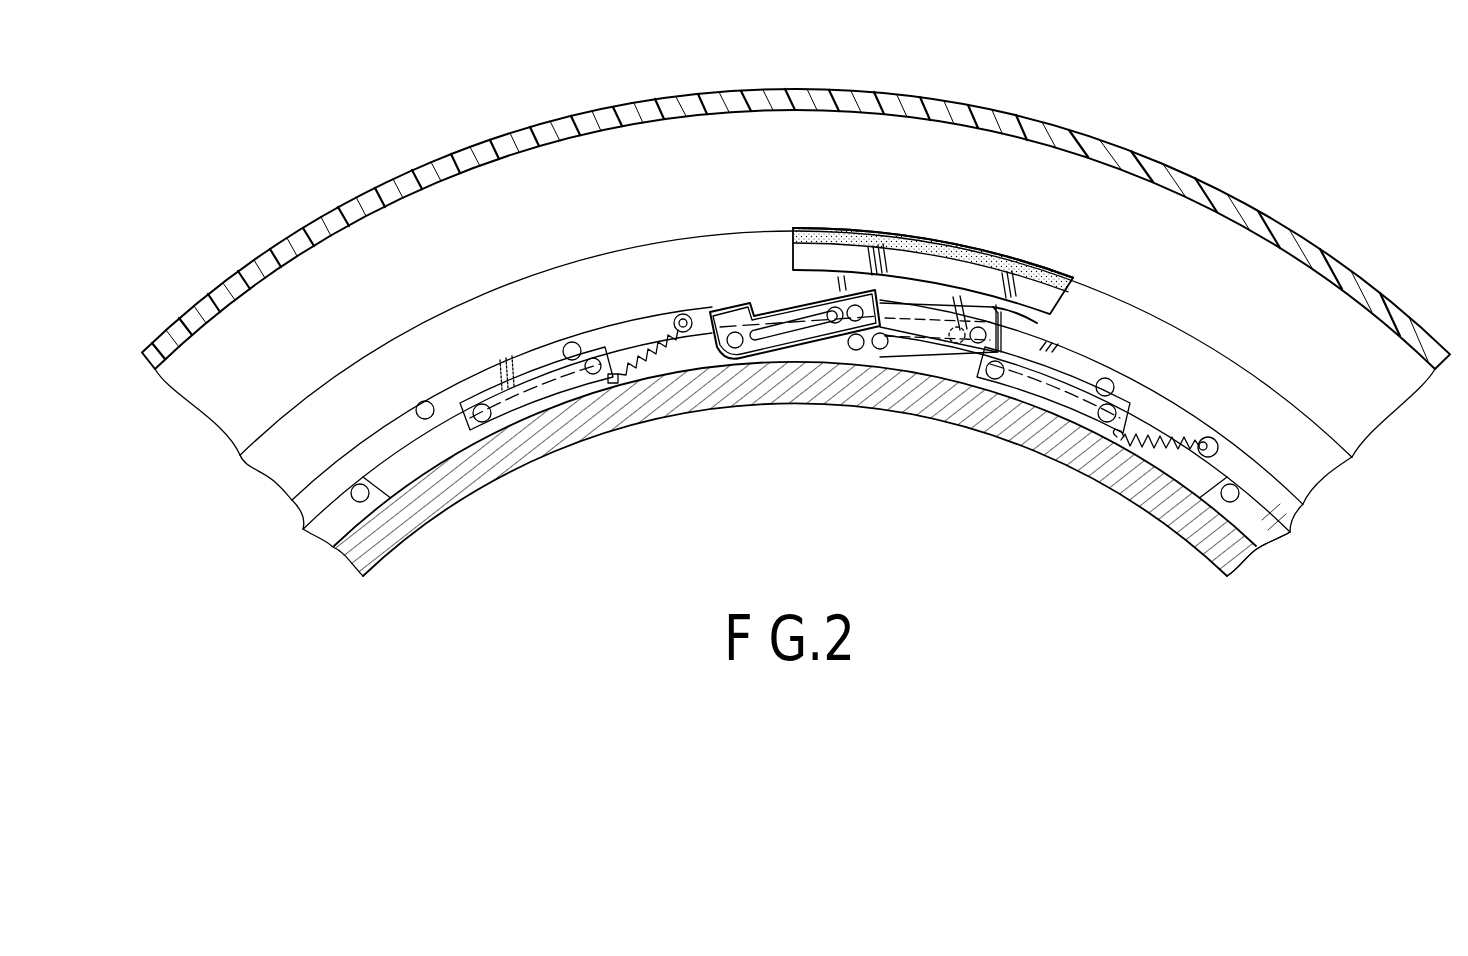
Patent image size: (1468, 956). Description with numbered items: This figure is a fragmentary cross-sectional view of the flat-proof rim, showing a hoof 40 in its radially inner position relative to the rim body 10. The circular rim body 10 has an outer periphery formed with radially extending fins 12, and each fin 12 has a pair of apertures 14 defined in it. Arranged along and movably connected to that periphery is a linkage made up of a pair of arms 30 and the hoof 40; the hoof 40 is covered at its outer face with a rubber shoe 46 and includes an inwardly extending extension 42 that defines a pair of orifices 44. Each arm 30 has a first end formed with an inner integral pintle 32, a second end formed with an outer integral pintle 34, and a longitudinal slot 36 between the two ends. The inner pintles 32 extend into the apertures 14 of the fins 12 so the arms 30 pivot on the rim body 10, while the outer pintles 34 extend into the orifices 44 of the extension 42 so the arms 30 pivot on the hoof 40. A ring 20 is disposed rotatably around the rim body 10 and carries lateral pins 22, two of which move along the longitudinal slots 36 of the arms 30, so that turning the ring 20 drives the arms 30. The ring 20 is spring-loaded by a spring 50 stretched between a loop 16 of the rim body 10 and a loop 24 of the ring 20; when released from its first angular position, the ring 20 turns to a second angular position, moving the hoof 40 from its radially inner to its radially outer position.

The rim body 10 is at (742, 410).
The fins 12 is at (1275, 540).
The apertures 14 is at (1225, 497).
The loop 16 is at (1117, 440).
The ring 20 is at (423, 442).
The lateral pins 22 is at (428, 400).
The loop 24 is at (1205, 440).
The arms 30 is at (799, 356).
The inner integral pintle 32 is at (857, 350).
The outer integral pintle 34 is at (975, 343).
The longitudinal slot 36 is at (785, 337).
The hoof 40 is at (959, 248).
The extension 42 is at (1040, 325).
The orifices 44 is at (984, 343).
The rubber shoe 46 is at (955, 250).
The spring 50 is at (640, 368).